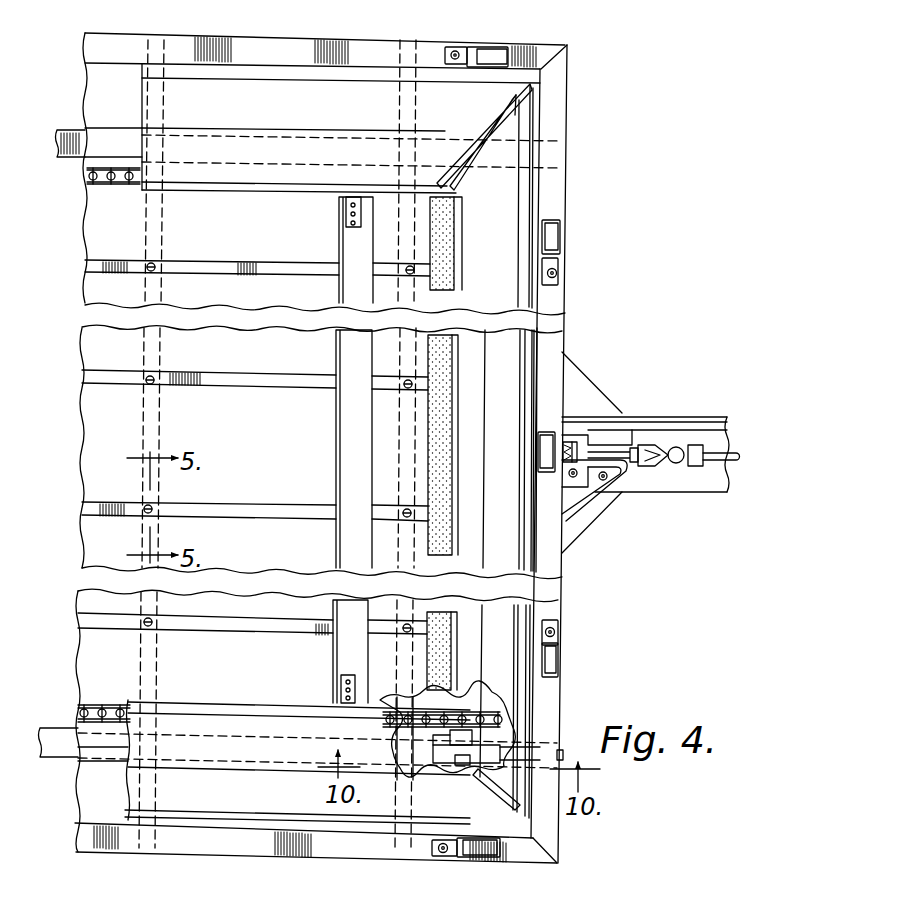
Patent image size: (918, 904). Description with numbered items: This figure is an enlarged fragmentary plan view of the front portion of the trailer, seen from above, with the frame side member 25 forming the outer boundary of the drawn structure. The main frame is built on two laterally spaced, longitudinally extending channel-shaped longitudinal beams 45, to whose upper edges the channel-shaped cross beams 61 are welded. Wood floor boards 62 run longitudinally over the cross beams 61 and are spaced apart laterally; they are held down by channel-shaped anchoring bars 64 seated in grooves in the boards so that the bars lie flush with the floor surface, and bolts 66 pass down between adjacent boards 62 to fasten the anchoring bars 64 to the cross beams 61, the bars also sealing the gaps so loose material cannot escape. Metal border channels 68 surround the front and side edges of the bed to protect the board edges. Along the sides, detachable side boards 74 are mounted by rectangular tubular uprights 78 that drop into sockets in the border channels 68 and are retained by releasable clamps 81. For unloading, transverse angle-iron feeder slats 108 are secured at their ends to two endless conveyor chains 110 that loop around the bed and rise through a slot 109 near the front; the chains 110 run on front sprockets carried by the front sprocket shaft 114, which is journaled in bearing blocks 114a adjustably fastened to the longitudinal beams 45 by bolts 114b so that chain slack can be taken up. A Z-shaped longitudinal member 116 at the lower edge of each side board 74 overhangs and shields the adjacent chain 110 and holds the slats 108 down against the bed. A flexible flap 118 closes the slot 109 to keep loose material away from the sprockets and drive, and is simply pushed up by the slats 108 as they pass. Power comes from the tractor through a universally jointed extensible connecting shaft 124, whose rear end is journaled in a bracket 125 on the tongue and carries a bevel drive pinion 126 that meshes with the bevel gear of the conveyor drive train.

The side board 74 is at (301, 41).
The door frame side member 25 is at (566, 201).
The border channel 68 is at (352, 857).
The floor board 62 is at (100, 418).
The longitudinal member 116 is at (241, 192).
The longitudinal beam 45 is at (56, 758).
The conveyor chain 110 is at (112, 186).
The cross beam 61 is at (162, 320).
The feeder slat 108 is at (344, 668).
The flap 118 is at (450, 440).
The anchoring bar 64 is at (203, 265).
The bolt 66 is at (155, 270).
The upright 78 is at (500, 46).
The releasable clamp 81 is at (455, 45).
The bracket 125 is at (582, 512).
The bevel drive pinion 126 is at (585, 456).
The connecting shaft 124 is at (697, 470).
The front sprocket shaft 114 is at (470, 767).
The bearing block 114a is at (438, 760).
The bolt 114b is at (563, 750).
The slot 109 is at (489, 708).